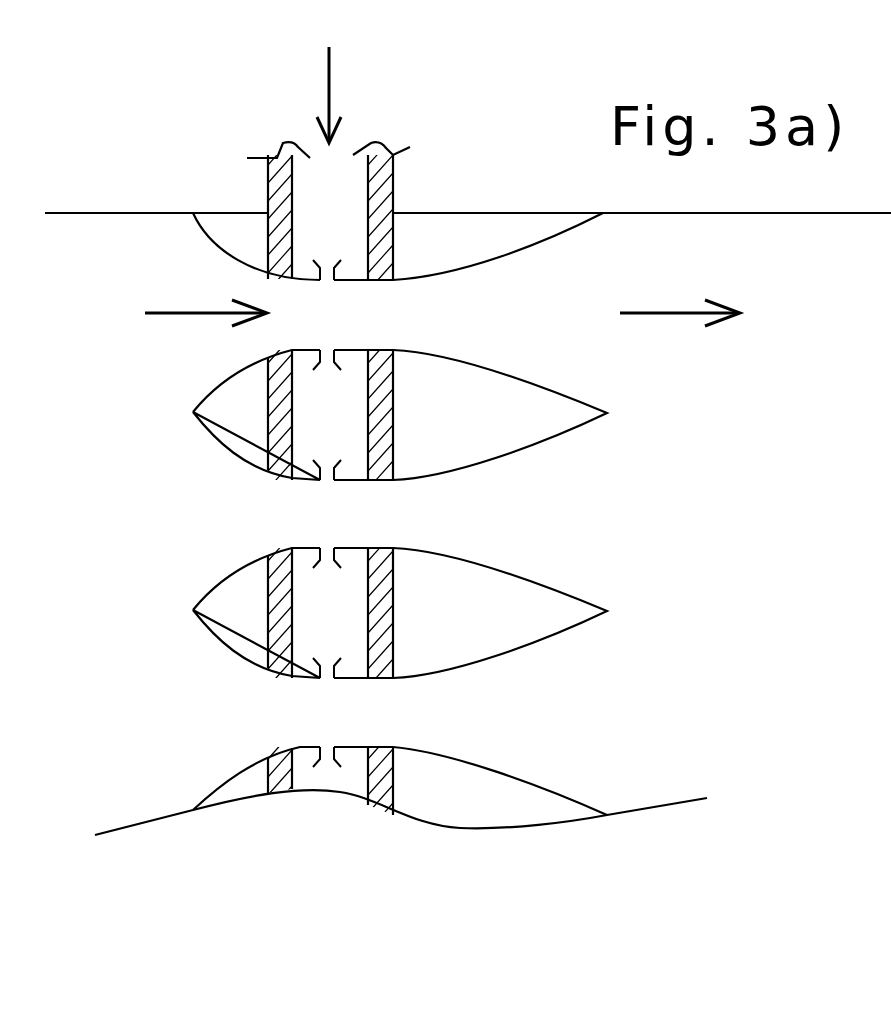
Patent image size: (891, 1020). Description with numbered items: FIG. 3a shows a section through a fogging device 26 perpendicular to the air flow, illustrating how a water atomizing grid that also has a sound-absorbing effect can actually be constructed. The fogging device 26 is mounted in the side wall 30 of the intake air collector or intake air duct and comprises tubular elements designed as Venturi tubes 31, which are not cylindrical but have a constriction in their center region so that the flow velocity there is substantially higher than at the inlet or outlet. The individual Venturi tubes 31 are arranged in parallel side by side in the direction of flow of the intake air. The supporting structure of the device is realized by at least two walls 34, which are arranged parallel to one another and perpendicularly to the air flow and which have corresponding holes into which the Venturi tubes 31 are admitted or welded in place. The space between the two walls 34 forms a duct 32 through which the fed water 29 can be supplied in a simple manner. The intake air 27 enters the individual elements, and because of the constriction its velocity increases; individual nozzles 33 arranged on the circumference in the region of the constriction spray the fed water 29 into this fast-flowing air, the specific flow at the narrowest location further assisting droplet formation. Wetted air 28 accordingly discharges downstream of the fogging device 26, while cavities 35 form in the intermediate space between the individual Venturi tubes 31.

The fogging device 26 is at (661, 897).
The intake air 27 is at (192, 317).
The wetted air 28 is at (663, 318).
The fed water 29 is at (332, 82).
The side wall 30 is at (143, 191).
The Venturi tube 31 is at (543, 352).
The duct for fed water 32 is at (366, 442).
The nozzles 33 is at (327, 282).
The walls 34 is at (280, 402).
The cavities 35 is at (527, 442).